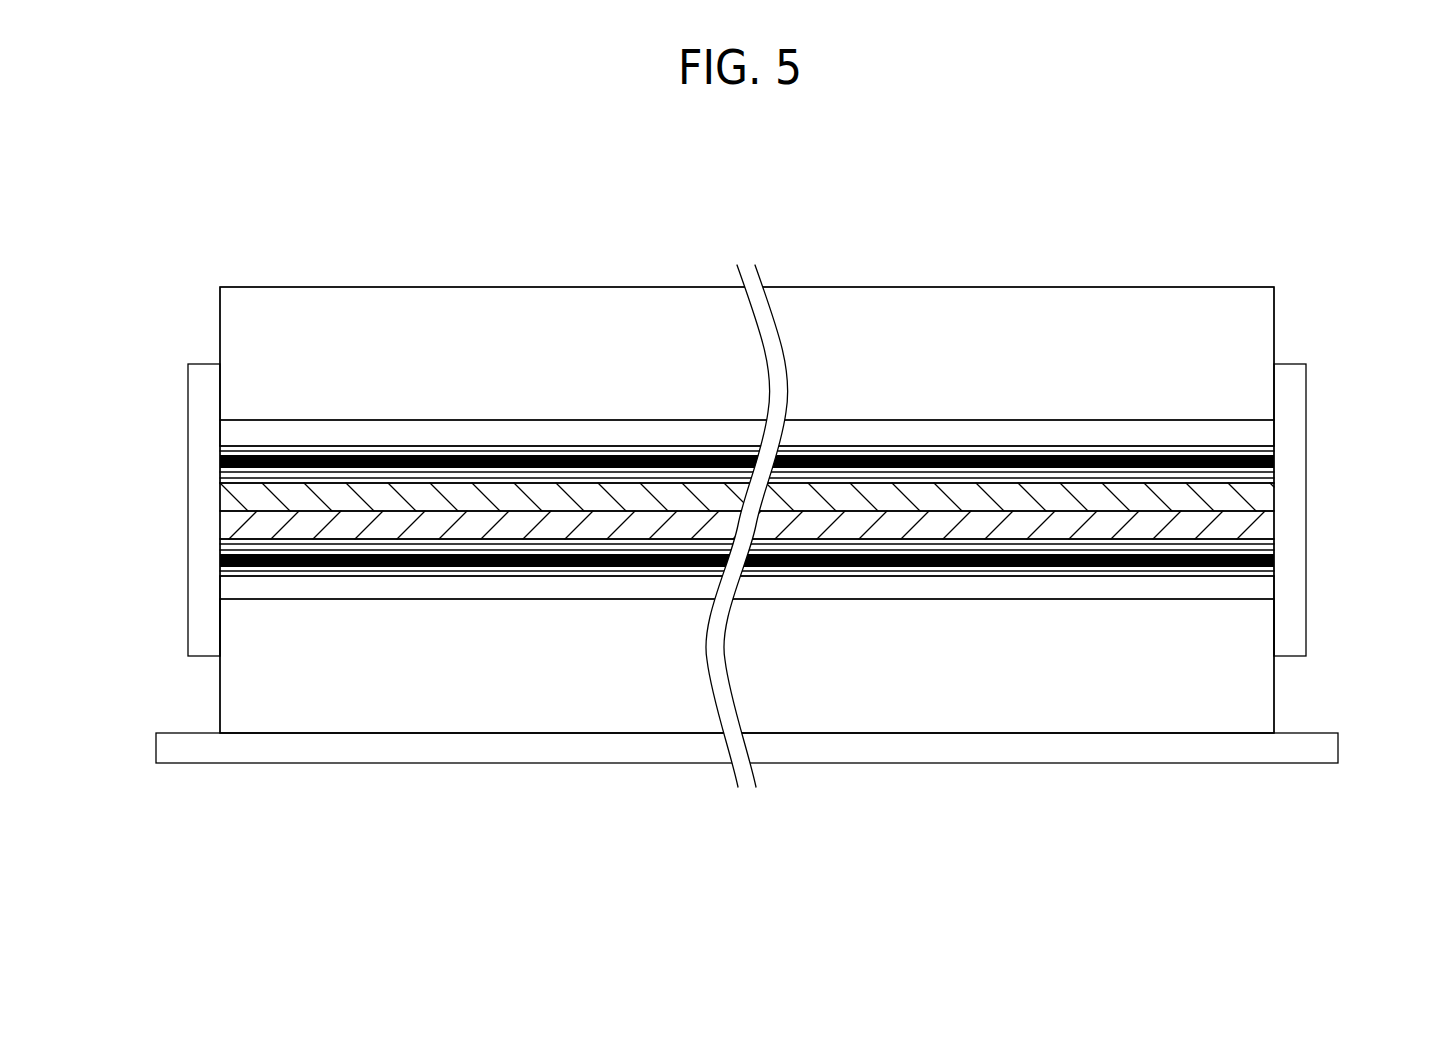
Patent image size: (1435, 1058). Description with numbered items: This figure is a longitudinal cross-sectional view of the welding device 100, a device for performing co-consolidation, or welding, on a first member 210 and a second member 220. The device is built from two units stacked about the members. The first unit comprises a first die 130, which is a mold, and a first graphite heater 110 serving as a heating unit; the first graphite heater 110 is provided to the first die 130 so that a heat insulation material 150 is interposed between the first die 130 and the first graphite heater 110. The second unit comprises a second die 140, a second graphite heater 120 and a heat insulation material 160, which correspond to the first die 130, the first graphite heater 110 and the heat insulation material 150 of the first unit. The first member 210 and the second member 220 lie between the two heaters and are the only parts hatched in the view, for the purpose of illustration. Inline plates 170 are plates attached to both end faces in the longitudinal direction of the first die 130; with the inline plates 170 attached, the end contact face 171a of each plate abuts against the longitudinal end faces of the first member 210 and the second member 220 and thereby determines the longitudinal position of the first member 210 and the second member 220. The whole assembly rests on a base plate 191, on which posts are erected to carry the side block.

The welding device 100 is at (581, 212).
The first graphite heater 110 is at (198, 561).
The second graphite heater 120 is at (198, 461).
The first die 130 is at (220, 700).
The second die 140 is at (220, 320).
The heat insulation material 150 is at (429, 600).
The heat insulation material 160 is at (430, 420).
The inline plate 170 is at (188, 396).
The end contact face 171a is at (220, 633).
The base plate 191 is at (319, 765).
The first member 210 is at (220, 525).
The second member 220 is at (220, 497).